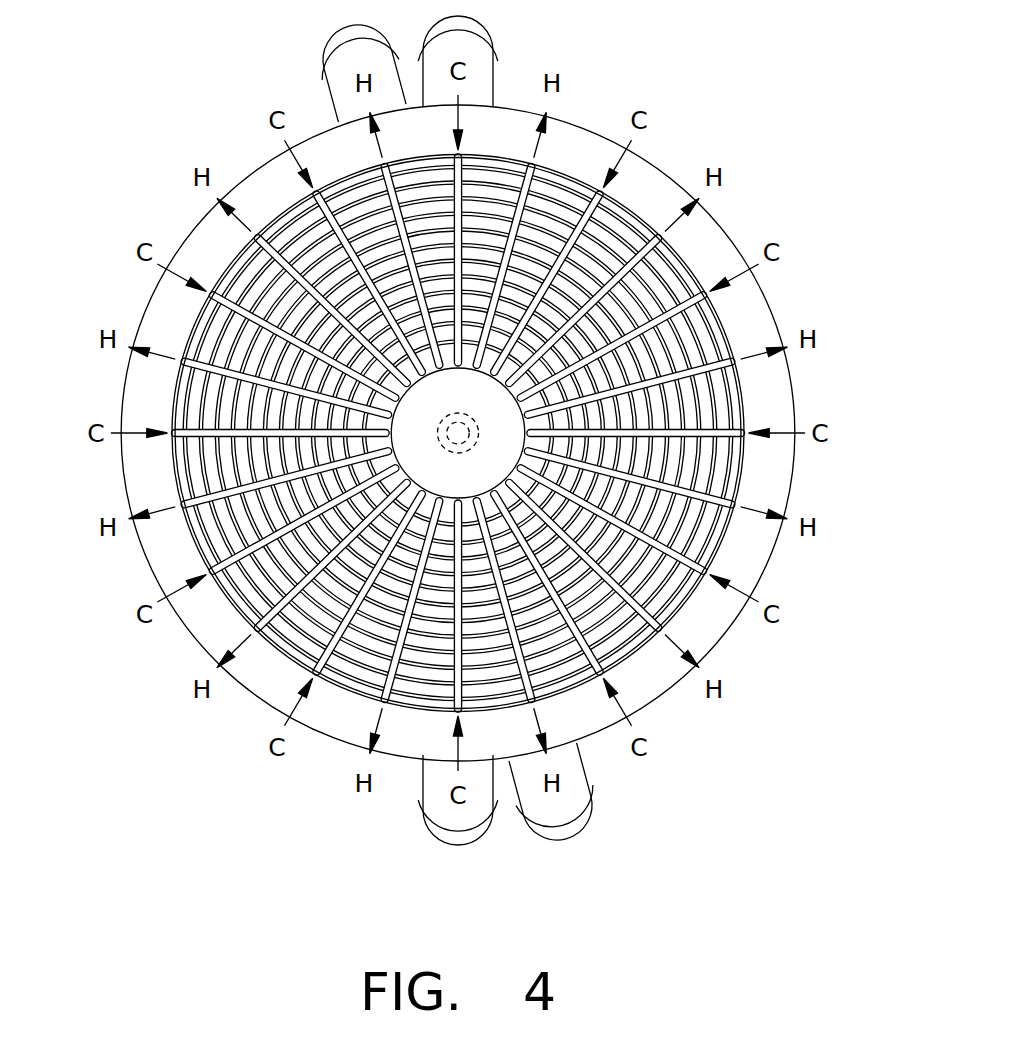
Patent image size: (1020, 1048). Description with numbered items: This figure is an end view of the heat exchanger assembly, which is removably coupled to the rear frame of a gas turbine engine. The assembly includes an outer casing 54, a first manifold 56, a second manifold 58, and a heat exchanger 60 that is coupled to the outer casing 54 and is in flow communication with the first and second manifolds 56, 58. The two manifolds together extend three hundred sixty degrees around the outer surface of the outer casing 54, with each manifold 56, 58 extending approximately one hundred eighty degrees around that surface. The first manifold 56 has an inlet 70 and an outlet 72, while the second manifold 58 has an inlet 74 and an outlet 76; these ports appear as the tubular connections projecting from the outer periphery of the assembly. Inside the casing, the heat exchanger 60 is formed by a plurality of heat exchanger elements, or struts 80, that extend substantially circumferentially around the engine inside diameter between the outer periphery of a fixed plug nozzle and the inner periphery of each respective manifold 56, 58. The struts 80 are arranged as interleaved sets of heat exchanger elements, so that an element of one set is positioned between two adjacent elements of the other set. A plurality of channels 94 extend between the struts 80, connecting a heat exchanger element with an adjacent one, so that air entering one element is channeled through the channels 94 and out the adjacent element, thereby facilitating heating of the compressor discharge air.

The outer casing 54 is at (745, 461).
The first manifold 56 is at (782, 394).
The second manifold 58 is at (168, 548).
The heat exchanger 60 is at (700, 355).
The inlet 70 is at (452, 830).
The outlet 72 is at (575, 825).
The inlet 74 is at (473, 37).
The outlet 76 is at (345, 52).
The struts 80 is at (600, 212).
The channels 94 is at (210, 478).